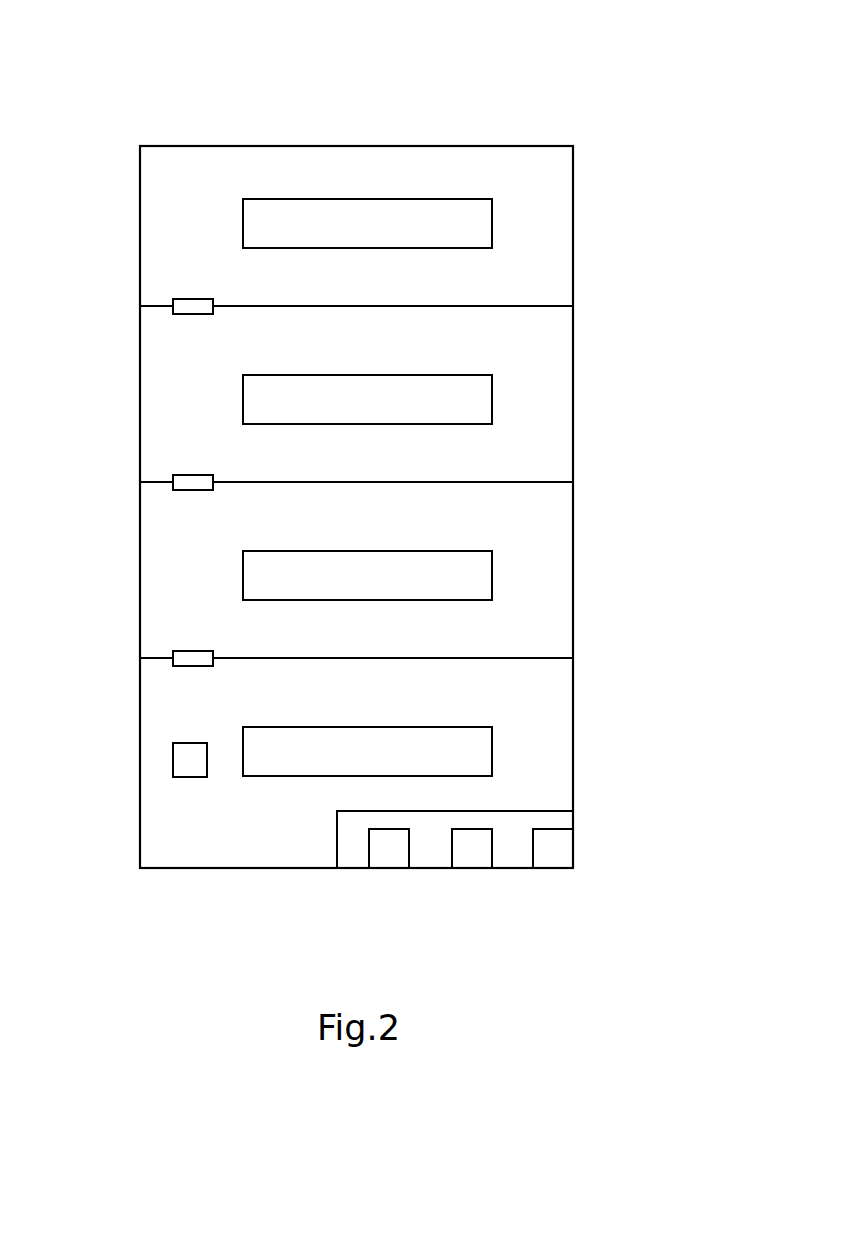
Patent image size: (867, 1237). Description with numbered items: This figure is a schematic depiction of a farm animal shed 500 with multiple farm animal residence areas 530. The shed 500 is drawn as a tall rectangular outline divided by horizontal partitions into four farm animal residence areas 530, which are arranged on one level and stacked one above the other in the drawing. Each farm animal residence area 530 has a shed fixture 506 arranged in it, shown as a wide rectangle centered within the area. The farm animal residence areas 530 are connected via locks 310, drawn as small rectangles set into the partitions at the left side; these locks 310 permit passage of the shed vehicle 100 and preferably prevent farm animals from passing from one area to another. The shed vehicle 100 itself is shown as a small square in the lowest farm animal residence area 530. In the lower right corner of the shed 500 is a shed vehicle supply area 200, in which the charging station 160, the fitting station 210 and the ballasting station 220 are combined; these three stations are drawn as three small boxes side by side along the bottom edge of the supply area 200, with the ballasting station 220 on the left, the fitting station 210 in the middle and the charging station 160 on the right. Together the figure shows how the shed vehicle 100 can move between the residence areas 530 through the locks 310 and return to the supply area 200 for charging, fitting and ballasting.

The storage system / cabinet 500 is at (546, 104).
The farm animal residence area 530 is at (556, 267).
The shed fixture 506 is at (384, 231).
The lock 310 is at (188, 304).
The shed vehicle 100 is at (182, 765).
The shed vehicle supply area 200 is at (573, 808).
The ballasting station 220 is at (382, 848).
The fitting station 210 is at (469, 848).
The charging station 160 is at (558, 848).